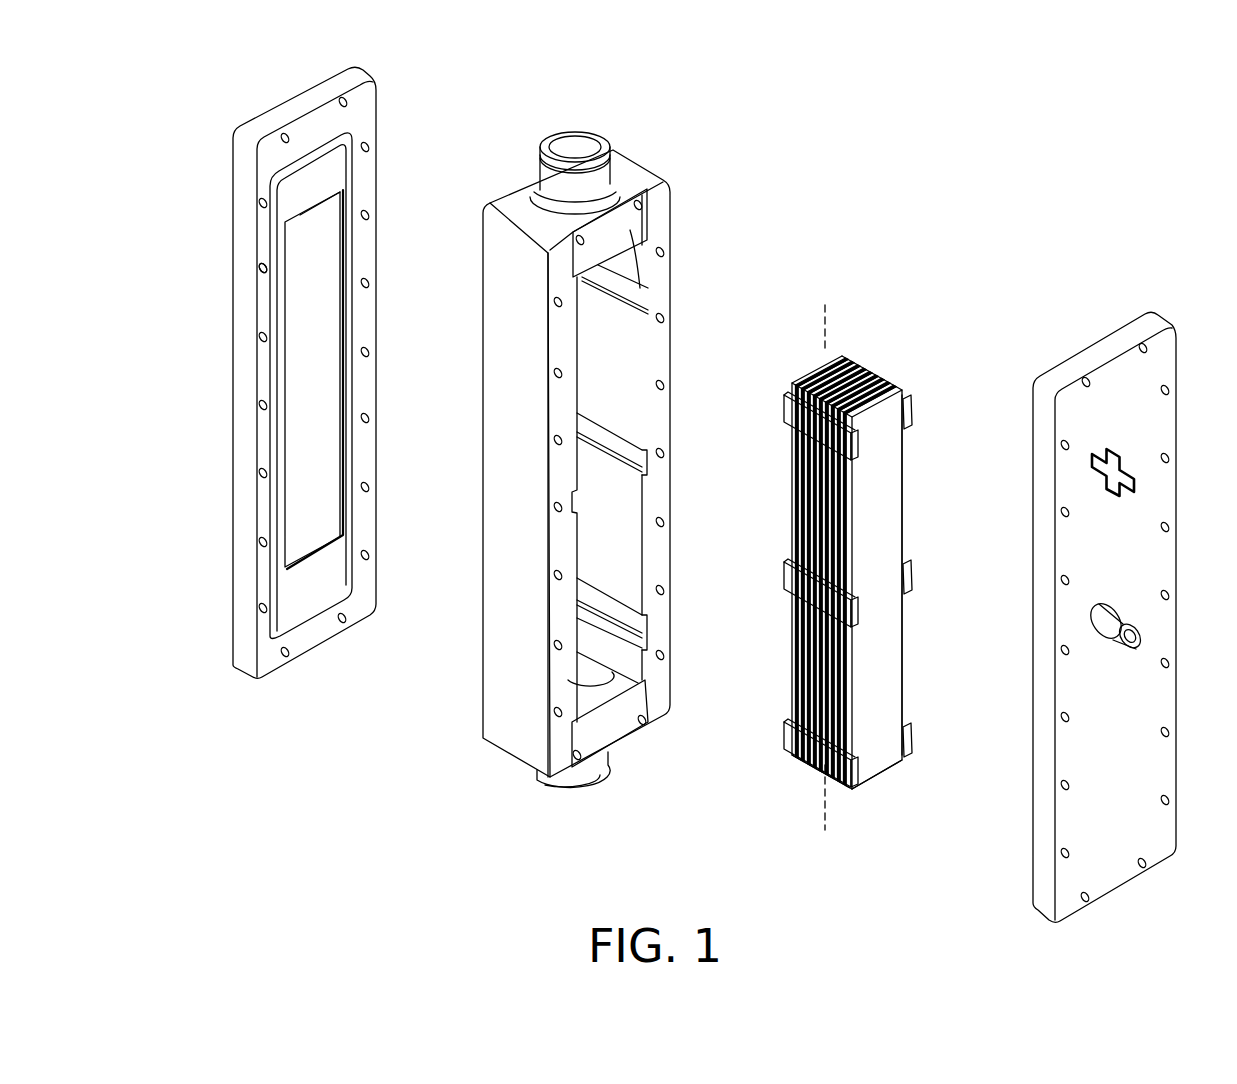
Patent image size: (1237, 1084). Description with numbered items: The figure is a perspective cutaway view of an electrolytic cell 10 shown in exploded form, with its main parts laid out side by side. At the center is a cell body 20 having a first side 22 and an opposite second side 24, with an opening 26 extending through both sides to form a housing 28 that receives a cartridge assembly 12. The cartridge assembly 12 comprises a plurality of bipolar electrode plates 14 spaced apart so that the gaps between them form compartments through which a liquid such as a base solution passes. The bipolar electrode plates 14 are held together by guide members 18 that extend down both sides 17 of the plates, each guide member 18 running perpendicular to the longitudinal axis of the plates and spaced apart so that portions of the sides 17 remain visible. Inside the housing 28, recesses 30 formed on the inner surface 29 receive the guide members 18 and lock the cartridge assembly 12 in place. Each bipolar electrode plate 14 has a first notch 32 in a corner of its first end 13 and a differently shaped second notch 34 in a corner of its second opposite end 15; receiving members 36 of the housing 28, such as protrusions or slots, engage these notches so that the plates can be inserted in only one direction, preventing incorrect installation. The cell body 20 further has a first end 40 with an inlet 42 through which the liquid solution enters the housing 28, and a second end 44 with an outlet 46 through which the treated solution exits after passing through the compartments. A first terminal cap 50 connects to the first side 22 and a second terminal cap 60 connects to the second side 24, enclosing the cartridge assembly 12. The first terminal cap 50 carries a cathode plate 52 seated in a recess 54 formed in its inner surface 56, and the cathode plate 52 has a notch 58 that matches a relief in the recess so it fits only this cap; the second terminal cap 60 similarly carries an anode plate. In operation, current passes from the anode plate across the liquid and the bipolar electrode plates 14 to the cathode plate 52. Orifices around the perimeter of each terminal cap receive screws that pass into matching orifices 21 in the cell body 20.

The electrolytic cell 10 is at (282, 826).
The cartridge assembly 12 is at (860, 320).
The first end 13 is at (852, 368).
The bipolar electrode plates 14 is at (885, 522).
The second opposite end 15 is at (880, 778).
The sides 17 is at (790, 455).
The guide members 18 is at (800, 398).
The cell body 20 is at (705, 170).
The orifices 21 is at (553, 575).
The first side 22 is at (480, 640).
The second side 24 is at (665, 225).
The opening 26 is at (632, 583).
The housing 28 is at (592, 542).
The inner surface 29 is at (622, 365).
The recesses 30 is at (640, 452).
The first notch 32 is at (912, 400).
The second notch 34 is at (855, 790).
The receiving members 36 is at (652, 240).
The first end 40 is at (532, 142).
The inlet 42 is at (576, 142).
The second end 44 is at (542, 787).
The outlet 46 is at (582, 792).
The first terminal cap 50 is at (298, 74).
The cathode plate 52 is at (297, 430).
The recess 54 is at (295, 180).
The inner surface 56 is at (260, 337).
The notch 58 is at (352, 200).
The second terminal cap 60 is at (1165, 312).